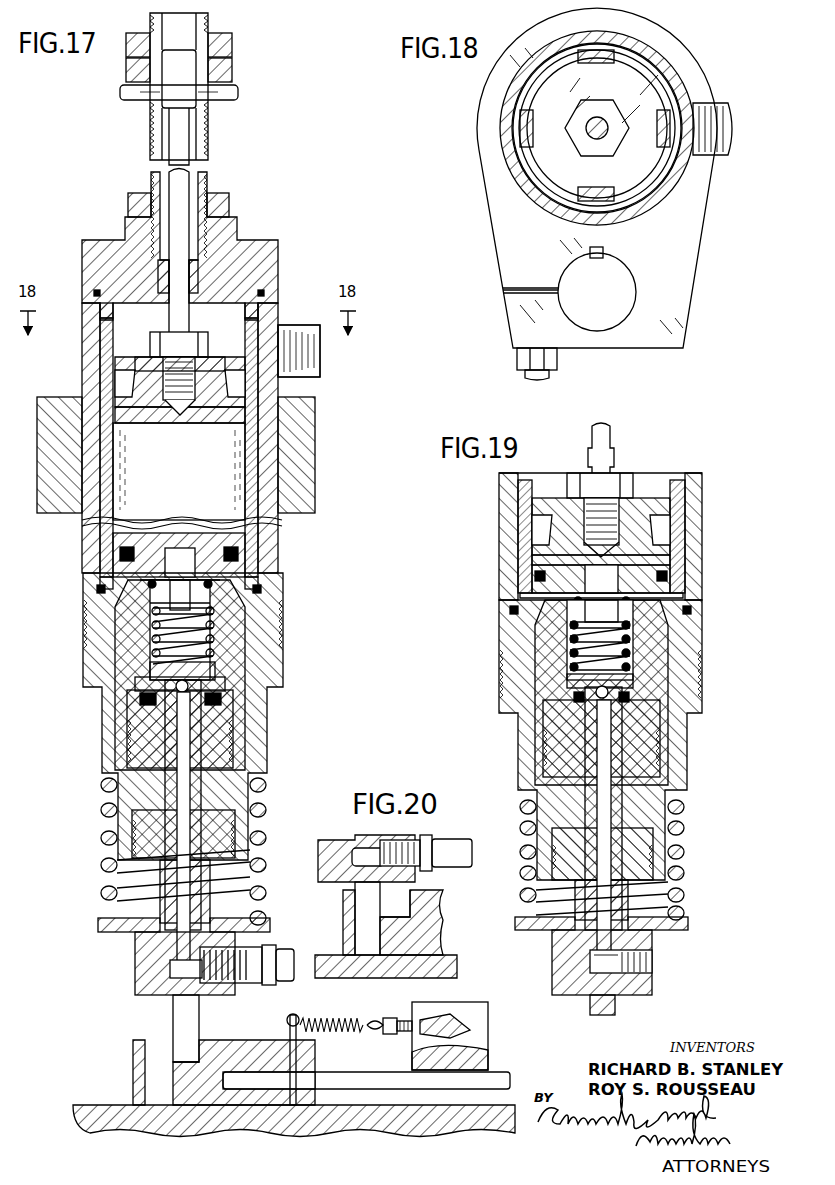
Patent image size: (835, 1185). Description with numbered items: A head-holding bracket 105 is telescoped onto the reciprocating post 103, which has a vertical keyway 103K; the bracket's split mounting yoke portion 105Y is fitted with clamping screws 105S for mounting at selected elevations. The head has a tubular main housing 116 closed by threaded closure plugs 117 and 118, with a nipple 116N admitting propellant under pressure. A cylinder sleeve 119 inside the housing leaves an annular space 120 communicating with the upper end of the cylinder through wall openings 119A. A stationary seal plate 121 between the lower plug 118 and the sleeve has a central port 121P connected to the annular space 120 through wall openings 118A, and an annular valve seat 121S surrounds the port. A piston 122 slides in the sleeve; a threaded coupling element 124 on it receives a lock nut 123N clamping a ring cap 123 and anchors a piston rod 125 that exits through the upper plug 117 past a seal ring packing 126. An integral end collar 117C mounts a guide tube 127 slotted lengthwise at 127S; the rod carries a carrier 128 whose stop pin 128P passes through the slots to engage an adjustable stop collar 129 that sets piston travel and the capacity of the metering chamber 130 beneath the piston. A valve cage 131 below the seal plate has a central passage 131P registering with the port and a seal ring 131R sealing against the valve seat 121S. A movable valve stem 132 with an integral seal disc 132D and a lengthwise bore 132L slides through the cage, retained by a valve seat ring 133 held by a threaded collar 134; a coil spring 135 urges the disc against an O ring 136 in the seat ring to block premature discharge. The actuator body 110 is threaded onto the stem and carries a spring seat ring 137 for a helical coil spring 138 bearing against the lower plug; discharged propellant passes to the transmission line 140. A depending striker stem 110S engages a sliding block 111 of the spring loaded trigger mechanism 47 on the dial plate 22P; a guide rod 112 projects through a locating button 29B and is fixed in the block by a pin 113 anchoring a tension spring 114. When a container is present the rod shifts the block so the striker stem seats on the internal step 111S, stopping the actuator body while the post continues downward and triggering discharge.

In FIG. 17, the guide tube 127 is at (208, 26).
In FIG. 17, the carrier 128 is at (180, 72).
In FIG. 17, the stop collar 129 is at (126, 72).
In FIG. 17, the stop pin 128P is at (238, 96).
In FIG. 17, the slots 127S is at (166, 136).
In FIG. 17, the piston rod 125 is at (185, 186).
In FIG. 19, the piston rod 125 is at (598, 440).
In FIG. 17, the upper end closure plug 117 is at (225, 232).
In FIG. 17, the integral end collar 117C is at (128, 218).
In FIG. 17, the seal ring packing 126 is at (165, 275).
In FIG. 17, the main housing 116 is at (90, 483).
In FIG. 18, the main housing 116 is at (672, 80).
In FIG. 19, the main housing 116 is at (510, 568).
In FIG. 17, the nipple 116N is at (292, 366).
In FIG. 18, the nipple 116N is at (728, 152).
In FIG. 17, the cylinder sleeve 119 is at (256, 445).
In FIG. 18, the cylinder sleeve 119 is at (522, 138).
In FIG. 19, the cylinder sleeve 119 is at (526, 495).
In FIG. 17, the wall openings 119A is at (280, 306).
In FIG. 18, the wall openings 119A is at (548, 183).
In FIG. 17, the annular space 120 is at (264, 372).
In FIG. 17, the coupling element 124 is at (160, 340).
In FIG. 19, the coupling element 124 is at (606, 488).
In FIG. 17, the ring cap 123 is at (222, 362).
In FIG. 19, the ring cap 123 is at (555, 510).
In FIG. 17, the lock nut 123N is at (140, 355).
In FIG. 19, the lock nut 123N is at (611, 462).
In FIG. 17, the piston 122 is at (160, 416).
In FIG. 19, the piston 122 is at (530, 563).
In FIG. 17, the metering chamber 130 is at (228, 487).
In FIG. 17, the head-holding bracket 105 is at (304, 460).
In FIG. 18, the head-holding bracket 105 is at (483, 114).
In FIG. 18, the split mounting yoke portion 105Y is at (515, 326).
In FIG. 18, the clamping screws 105S is at (520, 362).
In FIG. 18, the reciprocating post 103 is at (624, 304).
In FIG. 18, the keyway 103K is at (604, 252).
In FIG. 17, the stationary seal plate 121 is at (225, 553).
In FIG. 19, the stationary seal plate 121 is at (660, 583).
In FIG. 17, the annular valve seat 121S is at (150, 547).
In FIG. 17, the central port 121P is at (181, 574).
In FIG. 17, the lower end closure plug 118 is at (276, 688).
In FIG. 19, the lower end closure plug 118 is at (510, 700).
In FIG. 17, the wall openings 118A is at (100, 580).
In FIG. 17, the valve cage 131 is at (240, 644).
In FIG. 19, the valve cage 131 is at (662, 742).
In FIG. 17, the seal ring 131R is at (150, 600).
In FIG. 19, the seal ring 131R is at (624, 600).
In FIG. 17, the central passage 131P is at (190, 598).
In FIG. 17, the coil spring 135 is at (150, 640).
In FIG. 17, the seal disc 132D is at (205, 676).
In FIG. 19, the seal disc 132D is at (575, 678).
In FIG. 17, the valve seat ring 133 is at (140, 690).
In FIG. 17, the O ring 136 is at (165, 700).
In FIG. 19, the O ring 136 is at (636, 690).
In FIG. 17, the collar 134 is at (138, 735).
In FIG. 19, the collar 134 is at (565, 760).
In FIG. 17, the movable valve stem 132 is at (197, 755).
In FIG. 19, the movable valve stem 132 is at (596, 747).
In FIG. 17, the lengthwise bore 132L is at (188, 790).
In FIG. 19, the lengthwise bore 132L is at (608, 784).
In FIG. 17, the helical coil spring 138 is at (101, 840).
In FIG. 19, the helical coil spring 138 is at (684, 850).
In FIG. 17, the spring seat ring 137 is at (100, 926).
In FIG. 19, the spring seat ring 137 is at (690, 926).
In FIG. 17, the actuator body 110 is at (140, 968).
In FIG. 19, the actuator body 110 is at (562, 970).
In FIG. 20, the actuator body 110 is at (326, 860).
In FIG. 17, the transmission line 140 is at (284, 962).
In FIG. 20, the transmission line 140 is at (445, 850).
In FIG. 17, the striker stem 110S is at (178, 1012).
In FIG. 20, the striker stem 110S is at (366, 906).
In FIG. 17, the sliding block 111 is at (133, 1056).
In FIG. 20, the sliding block 111 is at (430, 918).
In FIG. 17, the internal step 111S is at (186, 1060).
In FIG. 20, the internal step 111S is at (402, 906).
In FIG. 17, the dial plate 22P is at (96, 1116).
In FIG. 20, the dial plate 22P is at (436, 972).
In FIG. 17, the guide rod 112 is at (332, 1080).
In FIG. 17, the pin 113 is at (290, 1048).
In FIG. 17, the tension spring 114 is at (312, 1024).
In FIG. 17, the trigger mechanism 47 is at (367, 1020).
In FIG. 17, the locating button 29B is at (470, 1022).